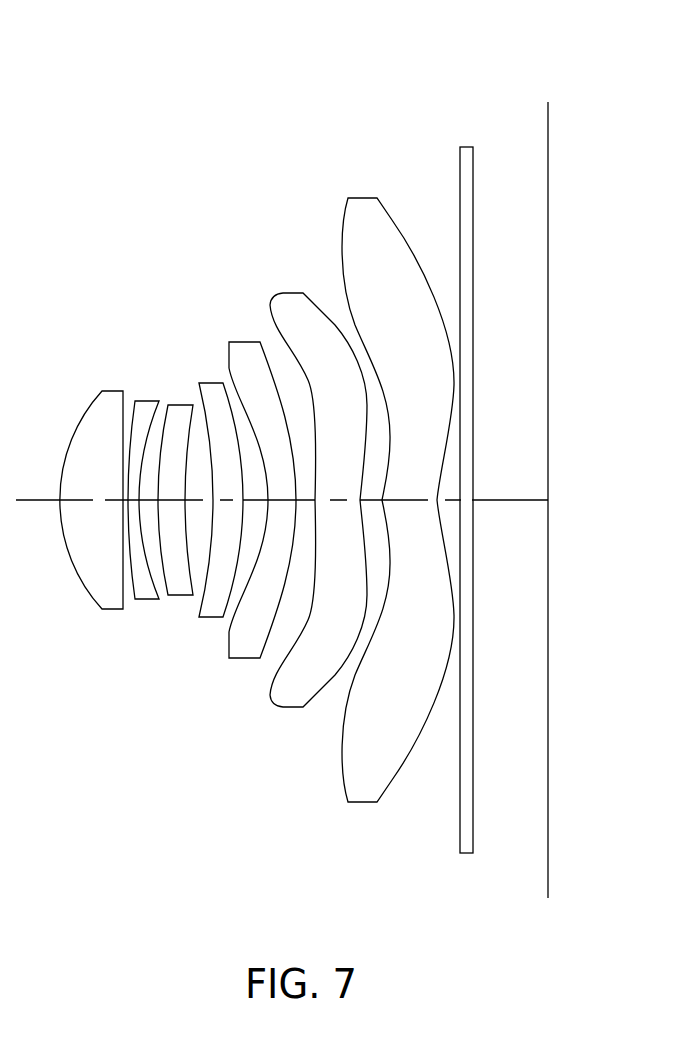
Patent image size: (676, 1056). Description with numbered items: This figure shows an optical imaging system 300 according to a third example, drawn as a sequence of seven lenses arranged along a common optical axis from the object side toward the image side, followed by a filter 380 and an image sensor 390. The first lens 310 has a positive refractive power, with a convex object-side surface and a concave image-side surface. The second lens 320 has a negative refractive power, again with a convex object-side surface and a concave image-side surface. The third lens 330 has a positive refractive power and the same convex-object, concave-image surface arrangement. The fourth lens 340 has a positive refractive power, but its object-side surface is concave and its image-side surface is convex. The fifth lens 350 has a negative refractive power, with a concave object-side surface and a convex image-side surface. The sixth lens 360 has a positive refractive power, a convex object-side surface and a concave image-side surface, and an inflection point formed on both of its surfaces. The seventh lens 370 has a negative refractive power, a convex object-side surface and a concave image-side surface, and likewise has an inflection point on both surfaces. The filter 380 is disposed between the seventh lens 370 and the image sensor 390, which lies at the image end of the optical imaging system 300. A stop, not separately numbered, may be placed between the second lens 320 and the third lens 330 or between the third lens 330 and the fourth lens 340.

The optical imaging system 300 is at (198, 172).
The first lens 310 is at (96, 600).
The second lens 320 is at (139, 599).
The third lens 330 is at (178, 596).
The fourth lens 340 is at (203, 617).
The fifth lens 350 is at (230, 342).
The sixth lens 360 is at (273, 302).
The seventh lens 370 is at (349, 197).
The filter 380 is at (463, 146).
The image sensor 390 is at (549, 102).